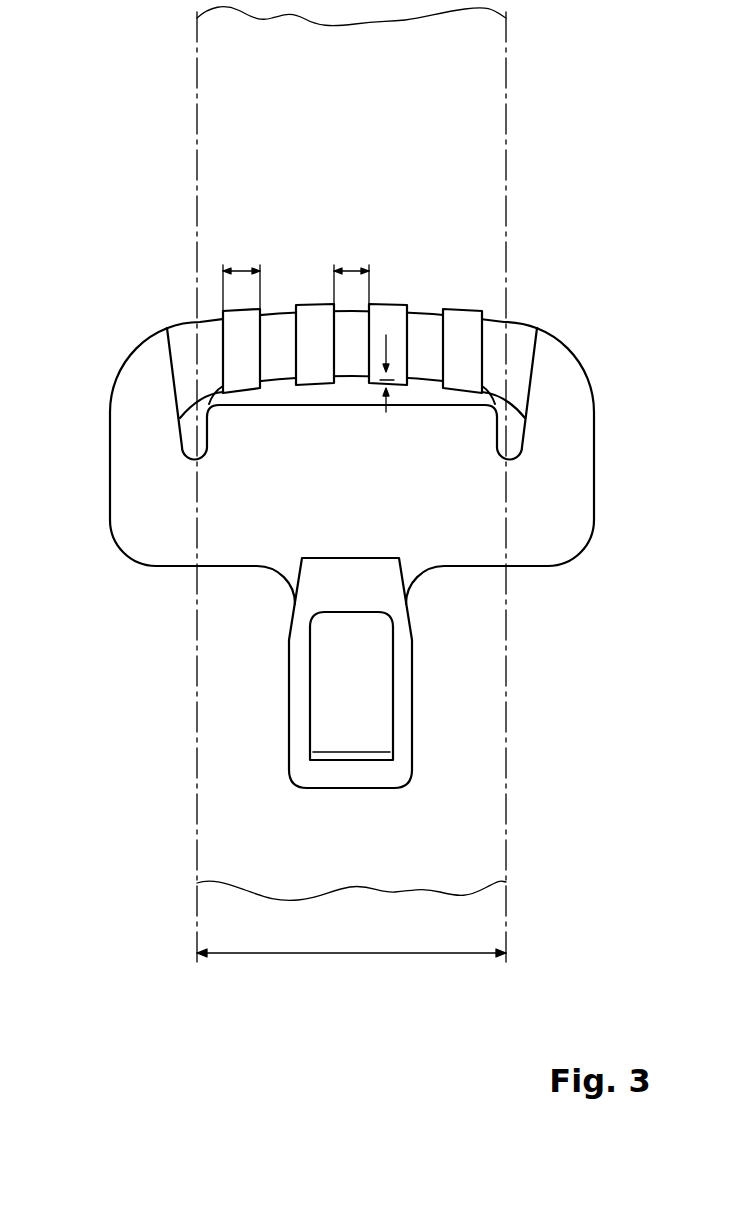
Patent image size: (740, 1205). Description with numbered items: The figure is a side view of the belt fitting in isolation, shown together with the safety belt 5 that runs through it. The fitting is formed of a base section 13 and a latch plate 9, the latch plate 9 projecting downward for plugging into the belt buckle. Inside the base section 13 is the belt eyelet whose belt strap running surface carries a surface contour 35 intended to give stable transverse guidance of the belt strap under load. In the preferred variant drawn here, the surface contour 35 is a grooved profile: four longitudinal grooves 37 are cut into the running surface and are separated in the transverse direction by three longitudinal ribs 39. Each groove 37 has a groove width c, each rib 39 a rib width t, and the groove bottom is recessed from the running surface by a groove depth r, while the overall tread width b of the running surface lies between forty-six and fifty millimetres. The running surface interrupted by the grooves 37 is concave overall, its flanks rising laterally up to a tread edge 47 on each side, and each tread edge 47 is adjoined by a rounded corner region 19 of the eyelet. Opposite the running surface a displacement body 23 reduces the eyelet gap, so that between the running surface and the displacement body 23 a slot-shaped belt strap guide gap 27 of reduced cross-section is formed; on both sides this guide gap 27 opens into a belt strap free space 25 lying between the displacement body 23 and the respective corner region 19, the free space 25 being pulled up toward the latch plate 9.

The safety belt 5 is at (508, 762).
The latch plate 9 is at (413, 660).
The base section 13 is at (567, 372).
The rounded corner region 19 is at (173, 422).
The displacement body 23 is at (289, 450).
The belt strap free space 25 is at (195, 446).
The belt strap guide gap 27 is at (317, 395).
The surface contour 35 is at (505, 122).
The longitudinal groove 37 is at (235, 332).
The longitudinal rib 39 is at (282, 330).
The tread edge 47 is at (213, 392).
The groove width c is at (238, 264).
The rib width t is at (350, 264).
The groove depth r is at (393, 382).
The tread width b is at (352, 955).